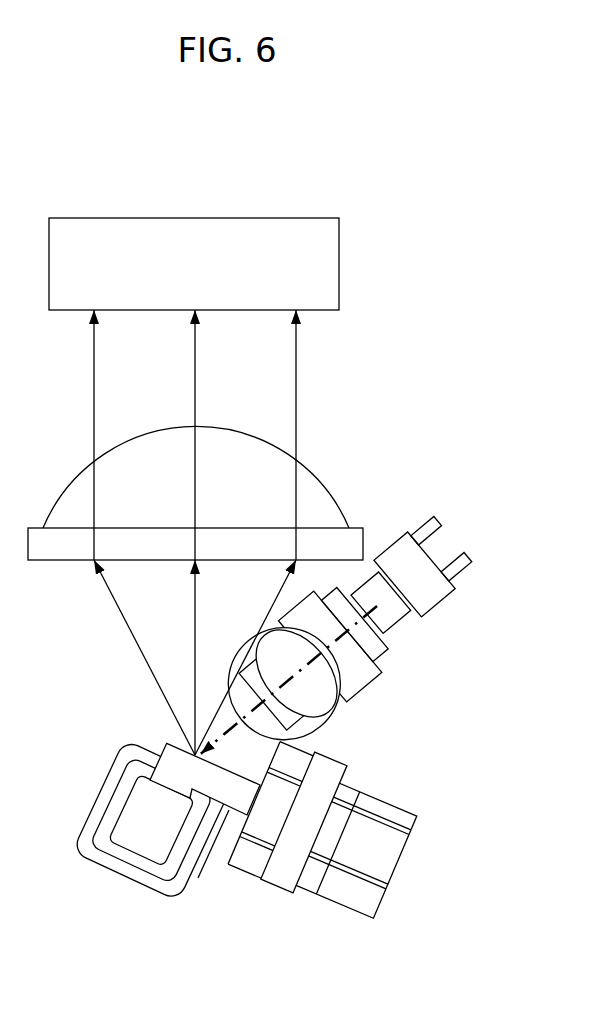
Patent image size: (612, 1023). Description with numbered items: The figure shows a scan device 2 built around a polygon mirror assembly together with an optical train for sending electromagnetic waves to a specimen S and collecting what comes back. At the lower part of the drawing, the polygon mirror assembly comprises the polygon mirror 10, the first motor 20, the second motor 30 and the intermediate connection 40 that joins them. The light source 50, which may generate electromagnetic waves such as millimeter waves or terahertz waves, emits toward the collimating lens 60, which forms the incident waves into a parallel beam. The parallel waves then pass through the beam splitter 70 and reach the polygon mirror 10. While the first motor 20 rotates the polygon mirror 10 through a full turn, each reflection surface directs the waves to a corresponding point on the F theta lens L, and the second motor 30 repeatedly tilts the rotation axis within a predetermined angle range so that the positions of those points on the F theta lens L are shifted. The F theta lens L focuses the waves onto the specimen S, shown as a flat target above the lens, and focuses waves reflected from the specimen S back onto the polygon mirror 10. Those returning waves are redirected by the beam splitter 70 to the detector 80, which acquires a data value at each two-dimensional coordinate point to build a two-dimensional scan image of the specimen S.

The scan device 2 is at (212, 153).
The specimen S is at (339, 263).
The F theta lens L is at (61, 498).
The polygon mirror 10 is at (132, 842).
The first motor 20 is at (126, 862).
The second motor 30 is at (360, 902).
The intermediate connection 40 is at (278, 882).
The light source 50 is at (397, 597).
The collimating lens 60 is at (340, 653).
The beam splitter 70 is at (337, 672).
The detector 80 is at (338, 717).